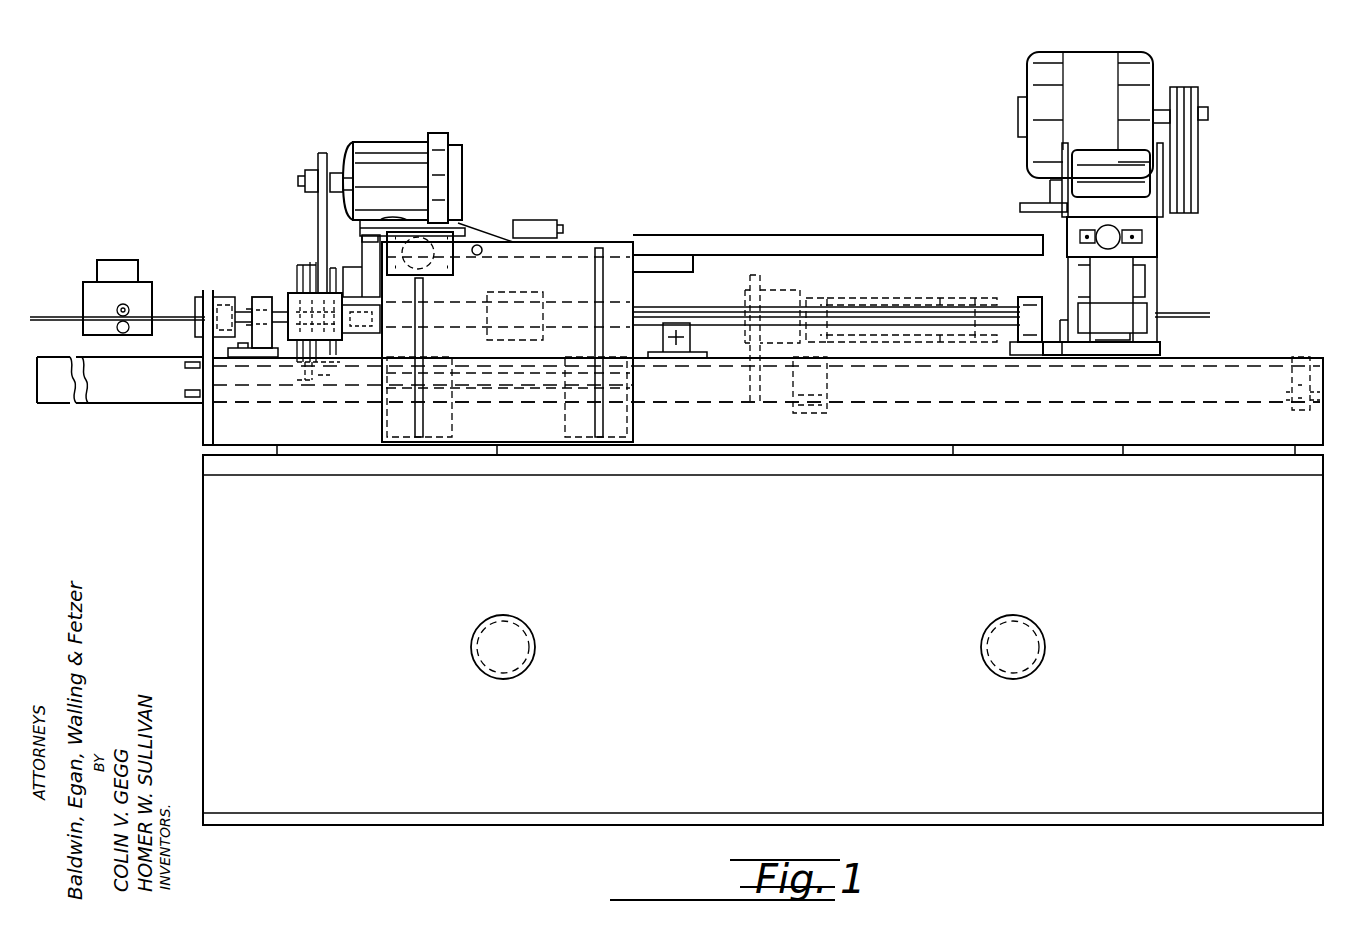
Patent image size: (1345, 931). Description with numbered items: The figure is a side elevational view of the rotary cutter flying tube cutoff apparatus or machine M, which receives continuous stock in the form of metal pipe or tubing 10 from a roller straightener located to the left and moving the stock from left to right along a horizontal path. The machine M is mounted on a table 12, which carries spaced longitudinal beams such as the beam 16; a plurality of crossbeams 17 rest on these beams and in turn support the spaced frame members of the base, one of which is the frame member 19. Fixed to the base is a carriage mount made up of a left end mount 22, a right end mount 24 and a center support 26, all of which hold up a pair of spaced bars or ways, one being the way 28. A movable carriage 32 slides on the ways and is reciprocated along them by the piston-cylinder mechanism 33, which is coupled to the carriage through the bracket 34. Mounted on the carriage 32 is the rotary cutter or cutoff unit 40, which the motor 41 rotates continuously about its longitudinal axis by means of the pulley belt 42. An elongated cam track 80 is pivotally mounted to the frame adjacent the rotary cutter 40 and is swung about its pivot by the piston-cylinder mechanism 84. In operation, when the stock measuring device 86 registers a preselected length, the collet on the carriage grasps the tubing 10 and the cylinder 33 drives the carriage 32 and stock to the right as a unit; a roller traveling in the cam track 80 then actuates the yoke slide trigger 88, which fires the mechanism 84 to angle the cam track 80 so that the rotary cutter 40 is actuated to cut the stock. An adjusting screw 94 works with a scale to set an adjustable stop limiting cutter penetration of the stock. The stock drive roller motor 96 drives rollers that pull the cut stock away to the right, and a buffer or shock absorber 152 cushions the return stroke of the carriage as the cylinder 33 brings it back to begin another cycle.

The metal pipe or tubing 10 is at (165, 318).
The table 12 is at (763, 640).
The longitudinal beam 16 is at (747, 468).
The crossbeams 17 is at (265, 452).
The frame member 19 is at (1328, 418).
The left end mount 22 is at (245, 300).
The right end mount 24 is at (1030, 297).
The center support 26 is at (700, 338).
The way 28 is at (700, 307).
The movable carriage 32 is at (290, 298).
The piston-cylinder mechanism 33 is at (1057, 404).
The bracket 34 is at (298, 350).
The rotary cutter 40 is at (345, 265).
The motor 41 is at (443, 133).
The pulley belt 42 is at (322, 222).
The cam track 80 is at (870, 236).
The piston-cylinder mechanism 84 is at (440, 272).
The stock measuring device 86 is at (124, 268).
The yoke slide trigger 88 is at (550, 225).
The adjusting screw 94 is at (478, 246).
The stock drive roller motor 96 is at (1145, 68).
The buffer or shock absorber 152 is at (85, 398).
The rotary cutter flying tube cutoff apparatus M is at (205, 424).